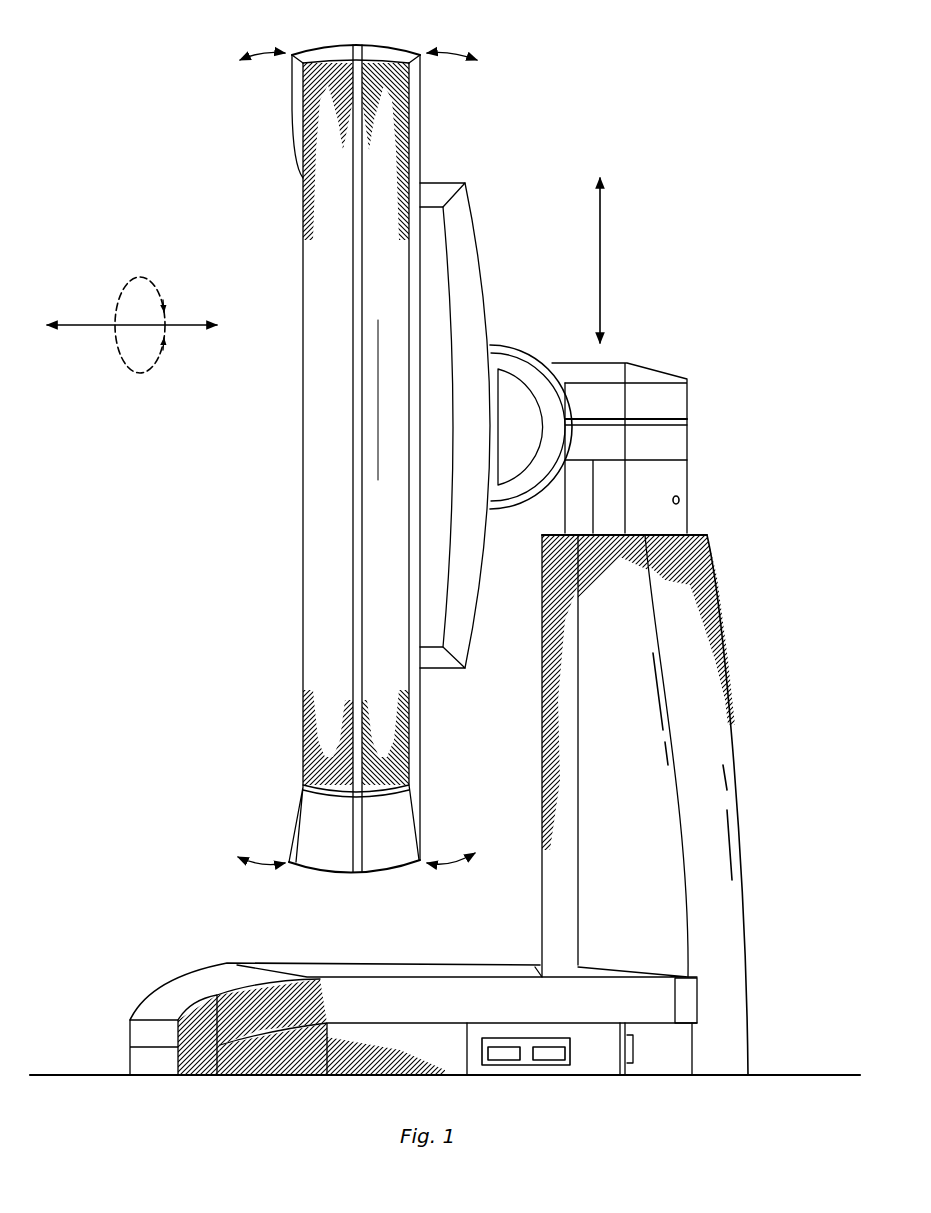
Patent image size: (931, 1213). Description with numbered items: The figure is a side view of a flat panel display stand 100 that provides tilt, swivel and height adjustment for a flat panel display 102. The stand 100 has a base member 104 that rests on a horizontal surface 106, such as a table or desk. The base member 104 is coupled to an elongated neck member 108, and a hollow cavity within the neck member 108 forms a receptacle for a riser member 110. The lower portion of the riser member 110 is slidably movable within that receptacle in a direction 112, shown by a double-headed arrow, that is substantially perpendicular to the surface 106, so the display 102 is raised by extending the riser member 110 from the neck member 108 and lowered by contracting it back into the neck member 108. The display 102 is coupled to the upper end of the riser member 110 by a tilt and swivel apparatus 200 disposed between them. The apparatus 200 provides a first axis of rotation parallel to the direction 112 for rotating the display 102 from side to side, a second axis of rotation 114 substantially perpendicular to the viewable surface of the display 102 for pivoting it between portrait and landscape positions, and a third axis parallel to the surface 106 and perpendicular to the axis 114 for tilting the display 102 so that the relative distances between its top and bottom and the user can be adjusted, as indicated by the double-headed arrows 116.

The flat panel display stand 100 is at (797, 412).
The flat panel display 102 is at (303, 282).
The base member 104 is at (170, 990).
The horizontal surface 106 is at (808, 1073).
The elongated neck member 108 is at (731, 660).
The riser member 110 is at (687, 503).
The direction of riser movement 112 is at (600, 262).
The second axis of rotation 114 is at (87, 322).
The tilt direction arrows 116 is at (262, 57).
The tilt and swivel apparatus 200 is at (702, 365).